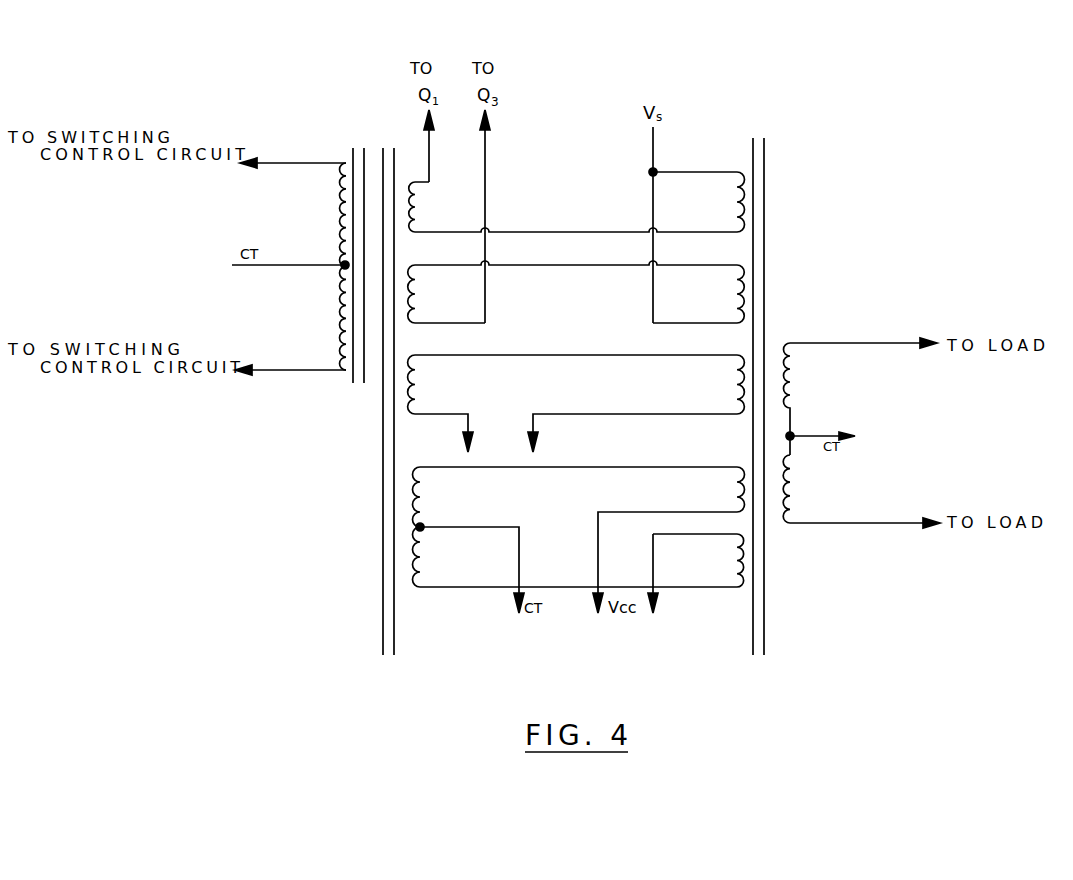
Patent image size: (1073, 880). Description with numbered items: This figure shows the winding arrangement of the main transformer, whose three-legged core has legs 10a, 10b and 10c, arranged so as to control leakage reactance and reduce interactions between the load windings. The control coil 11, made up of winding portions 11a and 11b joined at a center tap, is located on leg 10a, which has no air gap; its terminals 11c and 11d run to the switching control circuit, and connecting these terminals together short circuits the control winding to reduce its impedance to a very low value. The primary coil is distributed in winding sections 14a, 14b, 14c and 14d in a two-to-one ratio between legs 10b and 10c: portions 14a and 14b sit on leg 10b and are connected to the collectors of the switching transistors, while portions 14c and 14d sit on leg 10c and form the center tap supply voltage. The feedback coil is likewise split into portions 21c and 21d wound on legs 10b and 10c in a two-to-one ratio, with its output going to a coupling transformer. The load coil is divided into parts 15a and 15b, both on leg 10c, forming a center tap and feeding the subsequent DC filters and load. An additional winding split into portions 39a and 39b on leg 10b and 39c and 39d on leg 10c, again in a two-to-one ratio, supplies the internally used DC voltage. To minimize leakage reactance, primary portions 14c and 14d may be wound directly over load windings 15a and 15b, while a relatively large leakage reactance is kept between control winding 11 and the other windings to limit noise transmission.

The core leg 10a is at (356, 172).
The core leg 10b is at (383, 422).
The core leg 10c is at (764, 603).
The control coil 11 is at (330, 199).
The winding portion 11a is at (340, 214).
The winding portion 11b is at (340, 318).
The terminal 11c is at (243, 166).
The terminal 11d is at (245, 373).
The winding portion 14a is at (415, 192).
The winding portion 14b is at (416, 287).
The winding portion 14c is at (737, 185).
The winding portion 14d is at (742, 293).
The load coil part 15a is at (792, 377).
The load coil part 15b is at (792, 488).
The feedback coil portion 21c is at (414, 377).
The feedback coil portion 21d is at (733, 363).
The winding portion 39a is at (412, 494).
The winding portion 39b is at (412, 558).
The winding portion 39c is at (733, 483).
The winding portion 39d is at (734, 565).